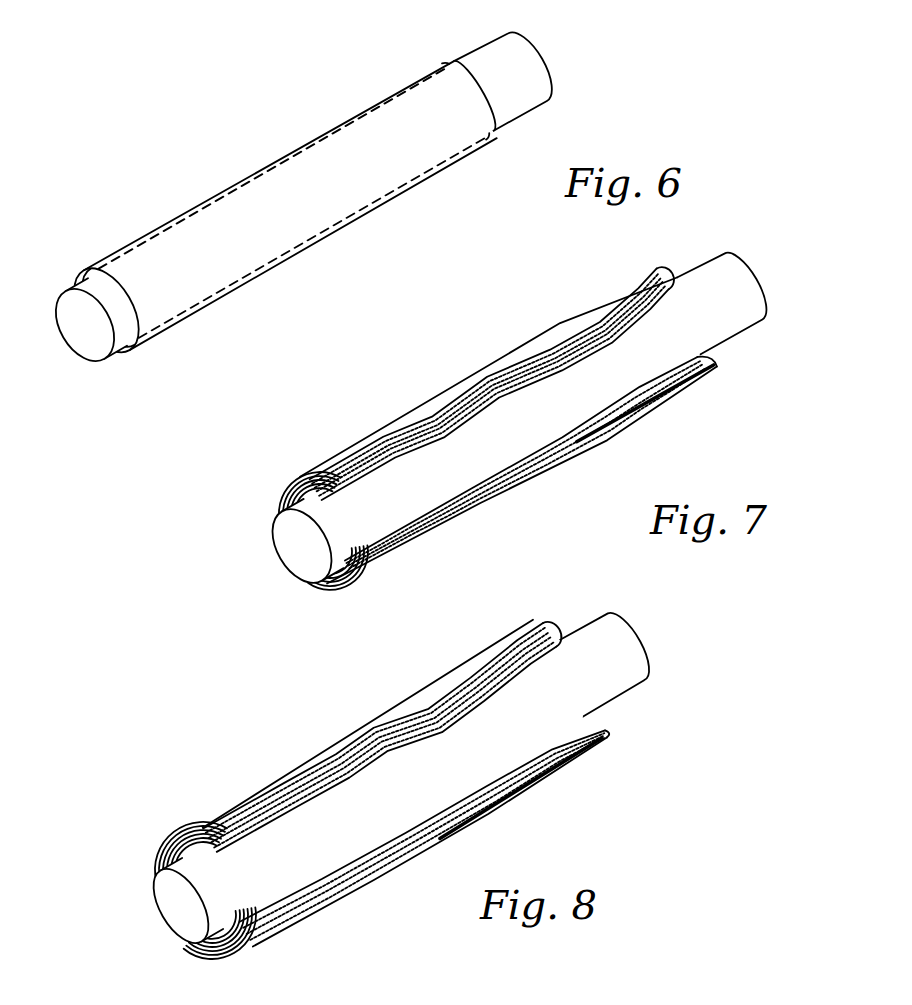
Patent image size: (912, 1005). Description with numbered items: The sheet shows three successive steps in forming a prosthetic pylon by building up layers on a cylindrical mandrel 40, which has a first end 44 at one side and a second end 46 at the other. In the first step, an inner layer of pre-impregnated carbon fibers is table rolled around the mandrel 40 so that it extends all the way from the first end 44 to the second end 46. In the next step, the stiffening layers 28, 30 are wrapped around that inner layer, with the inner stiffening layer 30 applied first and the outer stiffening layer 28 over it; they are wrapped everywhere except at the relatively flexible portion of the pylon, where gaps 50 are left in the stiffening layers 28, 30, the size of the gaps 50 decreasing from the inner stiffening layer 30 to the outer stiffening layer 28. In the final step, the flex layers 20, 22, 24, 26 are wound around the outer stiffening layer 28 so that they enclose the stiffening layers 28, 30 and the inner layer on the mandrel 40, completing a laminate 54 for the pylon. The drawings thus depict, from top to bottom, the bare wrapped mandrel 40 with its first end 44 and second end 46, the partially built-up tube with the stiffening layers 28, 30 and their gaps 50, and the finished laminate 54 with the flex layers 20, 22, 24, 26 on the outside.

In FIG. 8, the flex layer 20 is at (280, 786).
In FIG. 8, the flex layer 22 is at (215, 818).
In FIG. 7, the flex layer 24 is at (353, 460).
In FIG. 8, the flex layer 24 is at (188, 840).
In FIG. 7, the flex layer 26 is at (330, 470).
In FIG. 8, the flex layer 26 is at (197, 850).
In FIG. 7, the outer stiffening layer 28 is at (288, 503).
In FIG. 8, the outer stiffening layer 28 is at (173, 887).
In FIG. 6, the inner stiffening layer 30 is at (411, 100).
In FIG. 7, the inner stiffening layer 30 is at (277, 550).
In FIG. 8, the inner stiffening layer 30 is at (178, 917).
In FIG. 6, the mandrel 40 is at (291, 224).
In FIG. 7, the mandrel 40 is at (530, 437).
In FIG. 8, the mandrel 40 is at (433, 781).
In FIG. 6, the first end 44 is at (92, 338).
In FIG. 7, the first end 44 is at (308, 558).
In FIG. 8, the first end 44 is at (188, 918).
In FIG. 6, the second end 46 is at (548, 63).
In FIG. 7, the second end 46 is at (772, 272).
In FIG. 8, the second end 46 is at (647, 643).
In FIG. 7, the gaps 50 is at (367, 399).
In FIG. 8, the laminate 54 is at (386, 660).